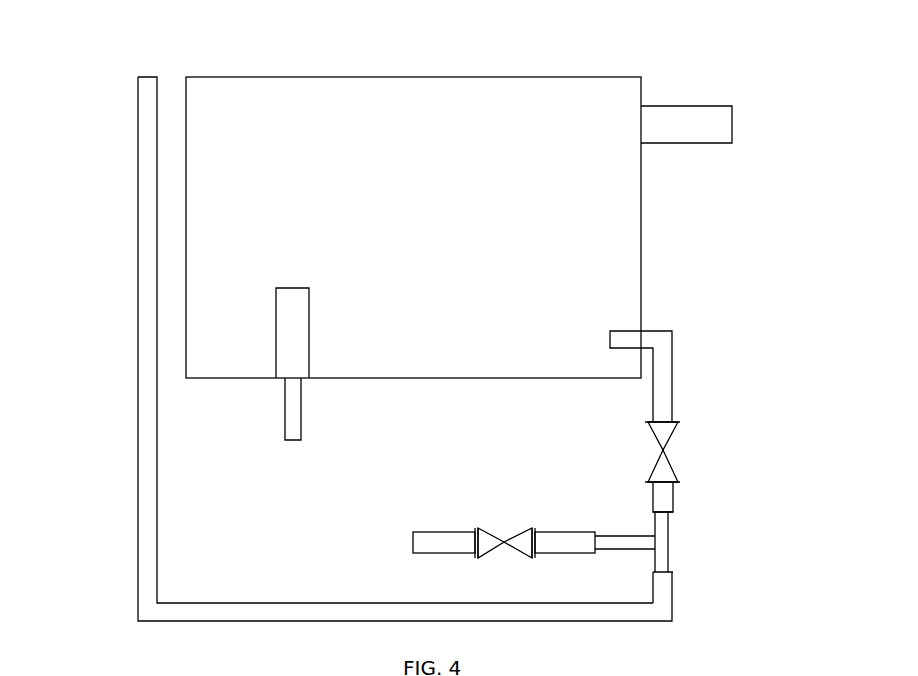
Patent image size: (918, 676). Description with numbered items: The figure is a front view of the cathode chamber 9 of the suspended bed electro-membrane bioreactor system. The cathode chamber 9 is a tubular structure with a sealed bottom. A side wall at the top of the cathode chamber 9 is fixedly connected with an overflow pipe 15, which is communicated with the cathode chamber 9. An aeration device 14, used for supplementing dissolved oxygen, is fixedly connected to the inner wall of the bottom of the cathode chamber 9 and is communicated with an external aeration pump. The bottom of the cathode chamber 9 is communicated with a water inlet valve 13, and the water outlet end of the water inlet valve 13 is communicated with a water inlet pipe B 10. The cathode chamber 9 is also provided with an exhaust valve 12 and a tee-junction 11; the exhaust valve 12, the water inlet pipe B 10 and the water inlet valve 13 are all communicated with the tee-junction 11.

The cathode chamber 9 is at (645, 72).
The water inlet pipe B 10 is at (136, 72).
The tee-junction 11 is at (674, 538).
The exhaust valve 12 is at (507, 540).
The water inlet valve 13 is at (667, 448).
The aeration device 14 is at (312, 287).
The overflow pipe 15 is at (737, 104).